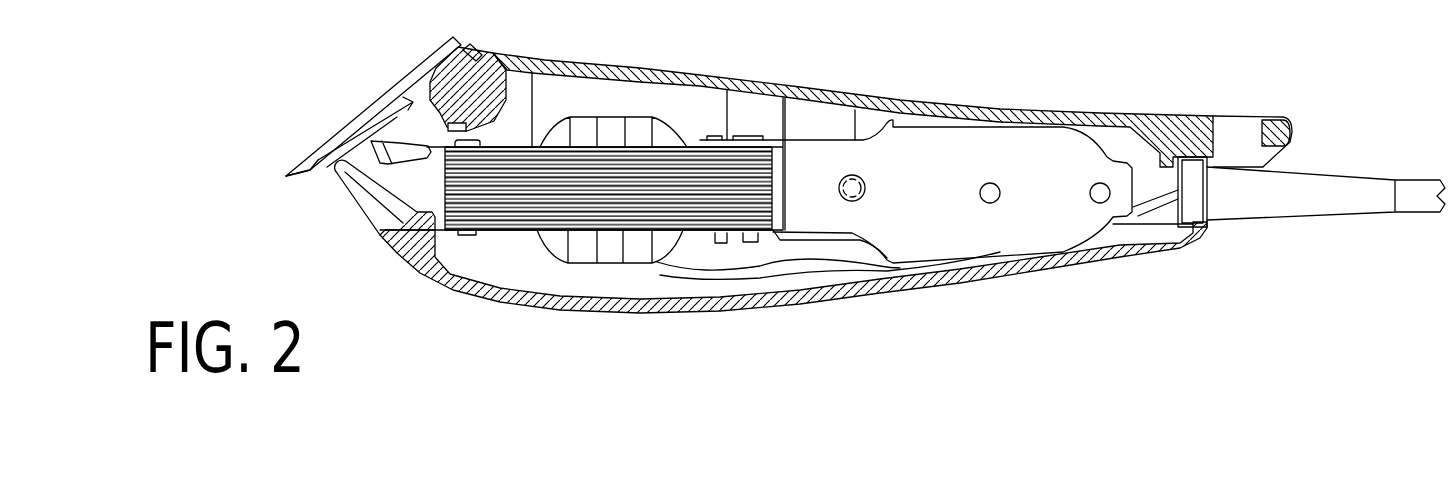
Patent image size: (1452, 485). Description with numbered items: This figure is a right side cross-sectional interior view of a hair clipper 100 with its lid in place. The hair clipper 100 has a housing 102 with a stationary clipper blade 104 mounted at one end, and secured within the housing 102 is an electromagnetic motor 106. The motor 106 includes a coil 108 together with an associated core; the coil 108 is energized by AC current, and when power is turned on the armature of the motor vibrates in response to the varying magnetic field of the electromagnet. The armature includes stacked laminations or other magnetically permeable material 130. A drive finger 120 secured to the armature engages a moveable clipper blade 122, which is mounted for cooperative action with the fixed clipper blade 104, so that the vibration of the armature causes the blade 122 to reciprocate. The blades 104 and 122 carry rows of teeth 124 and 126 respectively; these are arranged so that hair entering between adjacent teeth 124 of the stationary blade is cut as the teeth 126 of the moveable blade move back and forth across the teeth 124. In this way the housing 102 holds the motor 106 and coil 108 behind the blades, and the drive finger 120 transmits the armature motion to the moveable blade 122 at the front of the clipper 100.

The hair clipper 100 is at (1044, 76).
The housing 102 is at (913, 282).
The stationary clipper blade 104 is at (338, 128).
The electromagnetic motor 106 is at (660, 290).
The coil 108 is at (585, 250).
The drive finger 120 is at (411, 150).
The moveable clipper blade 122 is at (353, 148).
The teeth 124 is at (294, 166).
The teeth 126 is at (321, 167).
The magnetically permeable material 130 is at (683, 167).